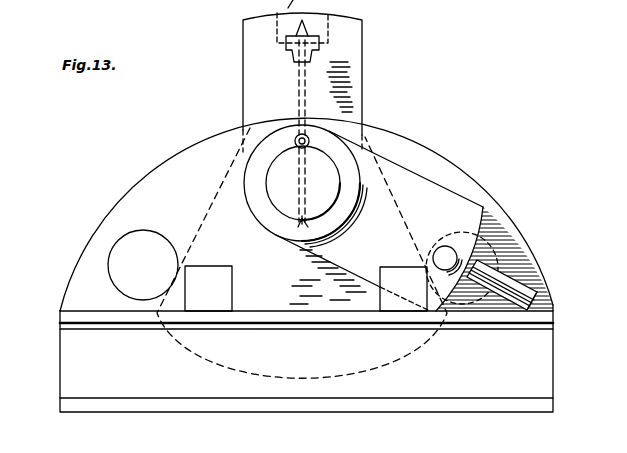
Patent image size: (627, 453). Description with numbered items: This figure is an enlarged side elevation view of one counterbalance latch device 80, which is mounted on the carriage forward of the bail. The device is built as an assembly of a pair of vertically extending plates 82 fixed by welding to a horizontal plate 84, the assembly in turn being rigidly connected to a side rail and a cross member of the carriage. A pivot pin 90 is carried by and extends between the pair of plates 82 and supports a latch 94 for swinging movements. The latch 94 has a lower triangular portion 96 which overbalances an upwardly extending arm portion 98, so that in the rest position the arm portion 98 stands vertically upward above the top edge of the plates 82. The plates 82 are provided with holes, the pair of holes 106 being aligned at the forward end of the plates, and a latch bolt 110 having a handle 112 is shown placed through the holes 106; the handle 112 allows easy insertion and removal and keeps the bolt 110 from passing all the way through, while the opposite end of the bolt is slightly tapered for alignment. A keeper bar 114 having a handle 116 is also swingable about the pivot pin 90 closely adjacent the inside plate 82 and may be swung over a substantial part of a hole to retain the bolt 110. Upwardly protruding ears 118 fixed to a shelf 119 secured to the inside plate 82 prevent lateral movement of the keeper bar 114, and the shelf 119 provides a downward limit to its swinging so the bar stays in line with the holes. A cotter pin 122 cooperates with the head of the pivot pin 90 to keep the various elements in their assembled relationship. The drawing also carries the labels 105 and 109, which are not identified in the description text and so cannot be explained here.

The counterbalance latch device 80 is at (501, 132).
The vertically extending plates 82 is at (147, 188).
The horizontal plate 84 is at (103, 405).
The pivot pin 90 is at (300, 187).
The latch 94 is at (365, 103).
The lower triangular portion 96 is at (203, 353).
The arm portion 98 is at (345, 47).
The roller 105 is at (120, 285).
The holes 106 is at (487, 249).
The rod 109 is at (300, 97).
The latch bolt 110 is at (533, 258).
The handle 112 is at (530, 300).
The keeper bar 114 is at (477, 213).
The handle 116 is at (446, 246).
The ears 118 is at (217, 285).
The shelf 119 is at (120, 318).
The cotter pin 122 is at (295, 143).